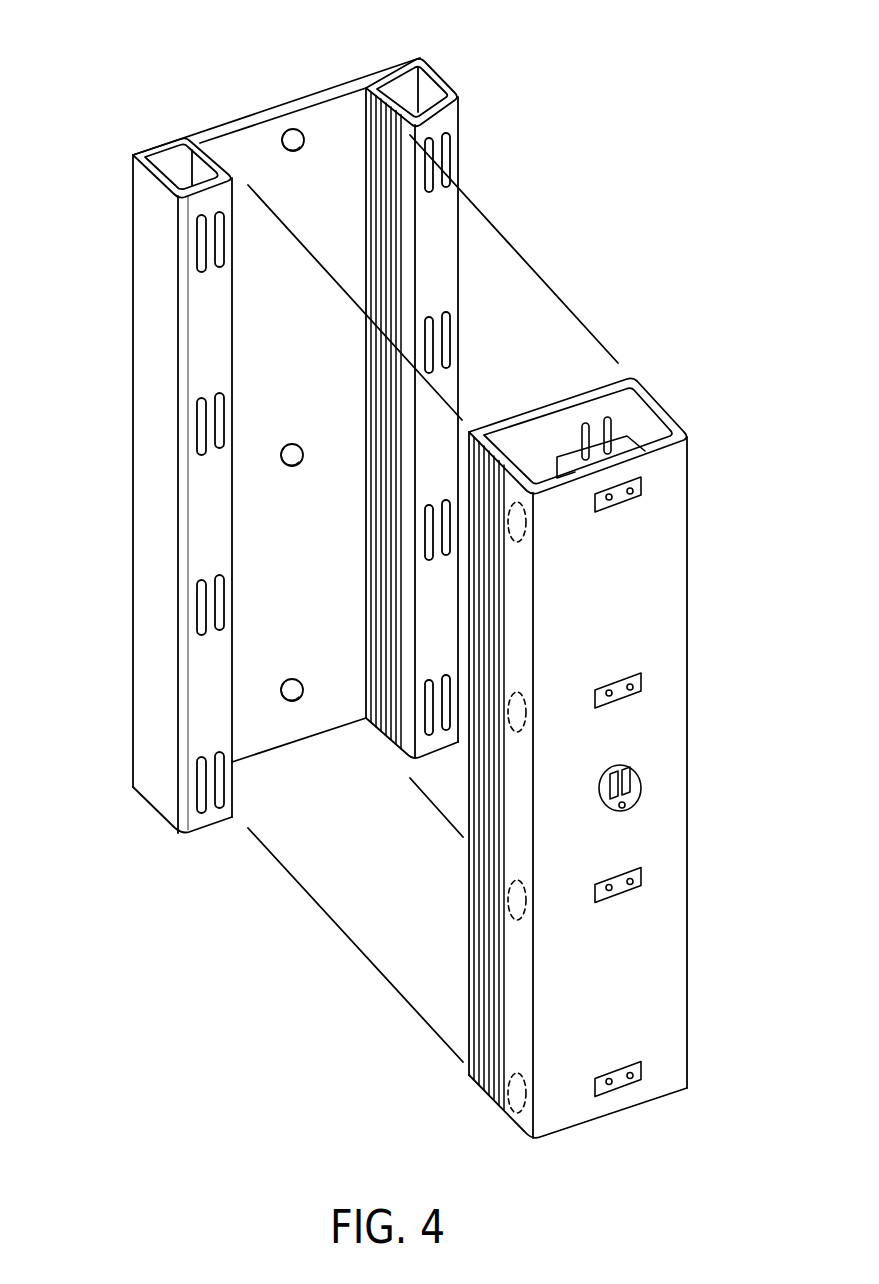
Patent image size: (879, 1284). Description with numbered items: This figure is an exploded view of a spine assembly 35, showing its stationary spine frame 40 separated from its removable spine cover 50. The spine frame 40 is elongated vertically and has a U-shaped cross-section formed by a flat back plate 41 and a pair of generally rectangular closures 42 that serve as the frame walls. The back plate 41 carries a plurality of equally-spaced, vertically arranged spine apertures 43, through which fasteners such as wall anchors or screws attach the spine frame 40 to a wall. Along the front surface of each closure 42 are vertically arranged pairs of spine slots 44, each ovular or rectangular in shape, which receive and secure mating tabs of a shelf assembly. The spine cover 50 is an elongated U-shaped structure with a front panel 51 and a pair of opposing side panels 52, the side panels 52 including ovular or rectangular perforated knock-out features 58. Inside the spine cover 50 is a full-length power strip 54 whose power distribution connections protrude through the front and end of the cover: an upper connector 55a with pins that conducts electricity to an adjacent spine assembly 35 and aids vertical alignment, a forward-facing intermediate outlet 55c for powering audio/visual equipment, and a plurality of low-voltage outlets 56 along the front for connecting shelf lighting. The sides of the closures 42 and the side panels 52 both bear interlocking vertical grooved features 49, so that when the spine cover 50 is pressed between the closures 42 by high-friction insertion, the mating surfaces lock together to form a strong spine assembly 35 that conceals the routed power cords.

The spine assembly 35 is at (534, 46).
The spine frame 40 is at (236, 116).
The back plate 41 is at (318, 165).
The closures 42 is at (150, 204).
The spine apertures 43 is at (292, 129).
The spine slots 44 is at (220, 242).
The grooved features 49 is at (389, 288).
The spine cover 50 is at (692, 556).
The front panel 51 is at (653, 805).
The side panels 52 is at (659, 410).
The power strip 54 is at (558, 442).
The upper connector 55a is at (586, 423).
The intermediate outlet 55c is at (641, 788).
The low-voltage outlets 56 is at (642, 485).
The knock-out features 58 is at (522, 540).